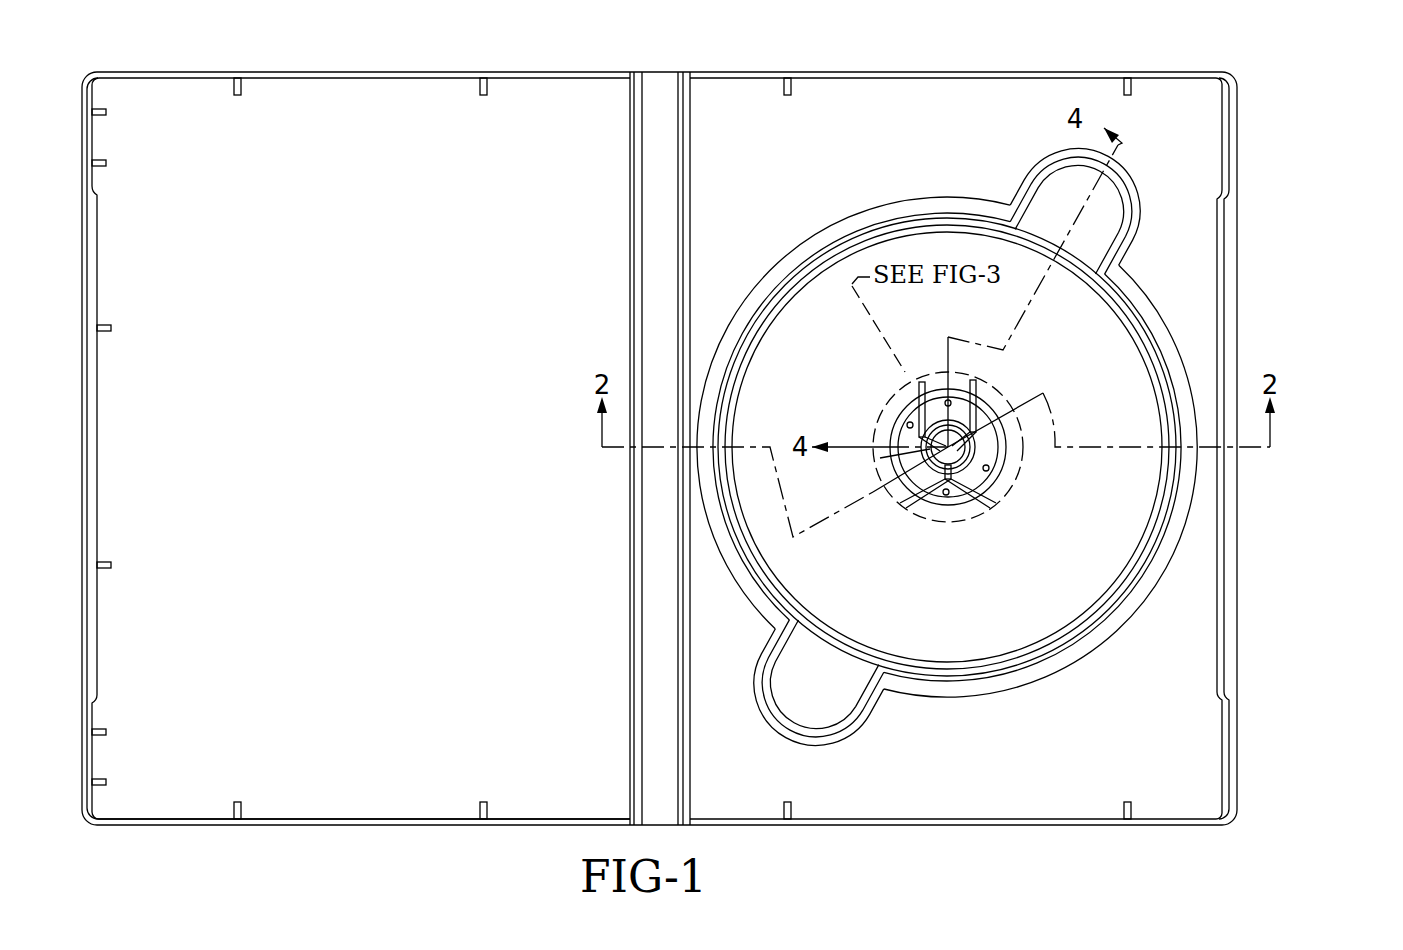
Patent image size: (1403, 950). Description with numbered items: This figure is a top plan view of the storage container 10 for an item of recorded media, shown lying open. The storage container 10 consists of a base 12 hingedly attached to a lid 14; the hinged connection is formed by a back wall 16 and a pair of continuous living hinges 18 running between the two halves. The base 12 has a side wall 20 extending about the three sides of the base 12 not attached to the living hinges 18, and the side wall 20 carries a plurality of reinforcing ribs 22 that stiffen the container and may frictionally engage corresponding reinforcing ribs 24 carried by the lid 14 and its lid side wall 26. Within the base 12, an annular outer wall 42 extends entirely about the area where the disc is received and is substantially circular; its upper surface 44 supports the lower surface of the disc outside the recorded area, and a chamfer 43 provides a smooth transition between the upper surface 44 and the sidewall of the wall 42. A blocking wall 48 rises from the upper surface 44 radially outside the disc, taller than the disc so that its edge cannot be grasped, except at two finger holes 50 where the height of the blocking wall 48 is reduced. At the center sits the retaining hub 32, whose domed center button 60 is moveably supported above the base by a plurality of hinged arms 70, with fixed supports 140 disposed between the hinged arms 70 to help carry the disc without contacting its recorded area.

The storage container 10 is at (1265, 105).
The base 12 is at (973, 828).
The lid 14 is at (343, 828).
The back wall 16 is at (662, 105).
The living hinges 18 is at (690, 170).
The side wall 20 is at (905, 78).
The reinforcing ribs 22 is at (792, 95).
The reinforcing ribs 24 is at (106, 113).
The lid side wall 26 is at (205, 72).
The retaining hub 32 is at (1005, 540).
The annular outer wall 42 is at (1090, 622).
The chamfer 43 is at (1162, 488).
The upper surface 44 is at (1052, 644).
The blocking wall 48 is at (1062, 652).
The finger holes 50 is at (1057, 200).
The center button 60 is at (1003, 532).
The hinged arms 70 is at (936, 386).
The fixed supports 140 is at (884, 410).